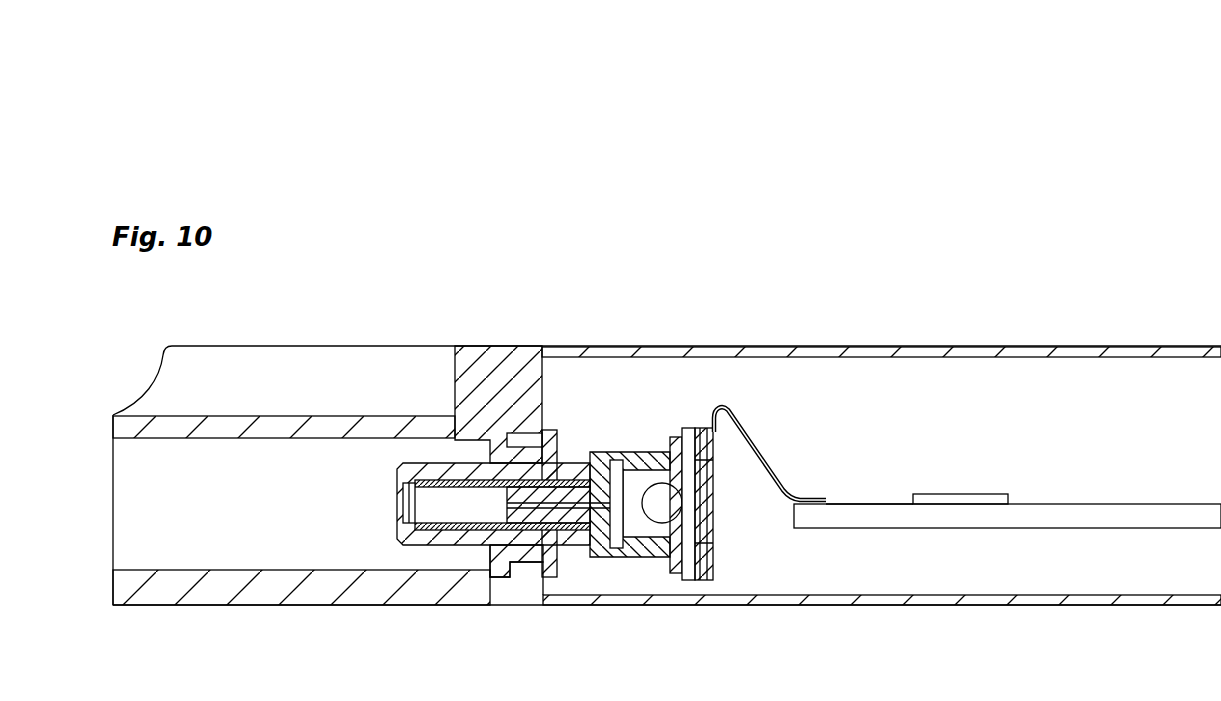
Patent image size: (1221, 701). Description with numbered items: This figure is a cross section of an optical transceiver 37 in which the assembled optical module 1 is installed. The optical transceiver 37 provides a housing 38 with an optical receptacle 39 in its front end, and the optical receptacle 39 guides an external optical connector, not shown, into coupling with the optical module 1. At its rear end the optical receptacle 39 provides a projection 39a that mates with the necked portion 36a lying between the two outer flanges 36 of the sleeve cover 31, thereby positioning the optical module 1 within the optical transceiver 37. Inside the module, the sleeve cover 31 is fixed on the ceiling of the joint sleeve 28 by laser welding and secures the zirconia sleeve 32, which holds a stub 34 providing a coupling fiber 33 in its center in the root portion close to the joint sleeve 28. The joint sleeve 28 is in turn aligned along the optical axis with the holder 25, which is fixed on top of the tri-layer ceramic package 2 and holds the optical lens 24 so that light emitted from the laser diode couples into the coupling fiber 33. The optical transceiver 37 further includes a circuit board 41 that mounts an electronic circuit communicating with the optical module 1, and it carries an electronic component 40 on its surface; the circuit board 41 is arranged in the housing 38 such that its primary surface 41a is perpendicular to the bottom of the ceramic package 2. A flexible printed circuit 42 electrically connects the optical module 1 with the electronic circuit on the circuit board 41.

The optical module 1 is at (456, 550).
The tri-layer ceramic package 2 is at (686, 428).
The optical lens 24 is at (659, 496).
The holder 25 is at (620, 458).
The joint sleeve 28 is at (593, 558).
The sleeve cover 31 is at (424, 464).
The sleeve 32 is at (452, 530).
The coupling fiber 33 is at (545, 505).
The stub 34 is at (574, 517).
The flanges 36 is at (491, 452).
The necked portion 36a is at (533, 433).
The optical transceiver 37 is at (1083, 281).
The housing 38 is at (739, 350).
The optical receptacle 39 is at (178, 597).
The projection 39a is at (499, 578).
The electronic component 40 is at (957, 498).
The circuit board 41 is at (1100, 508).
The primary surface 41a is at (870, 503).
The flexible printed circuit 42 is at (762, 450).